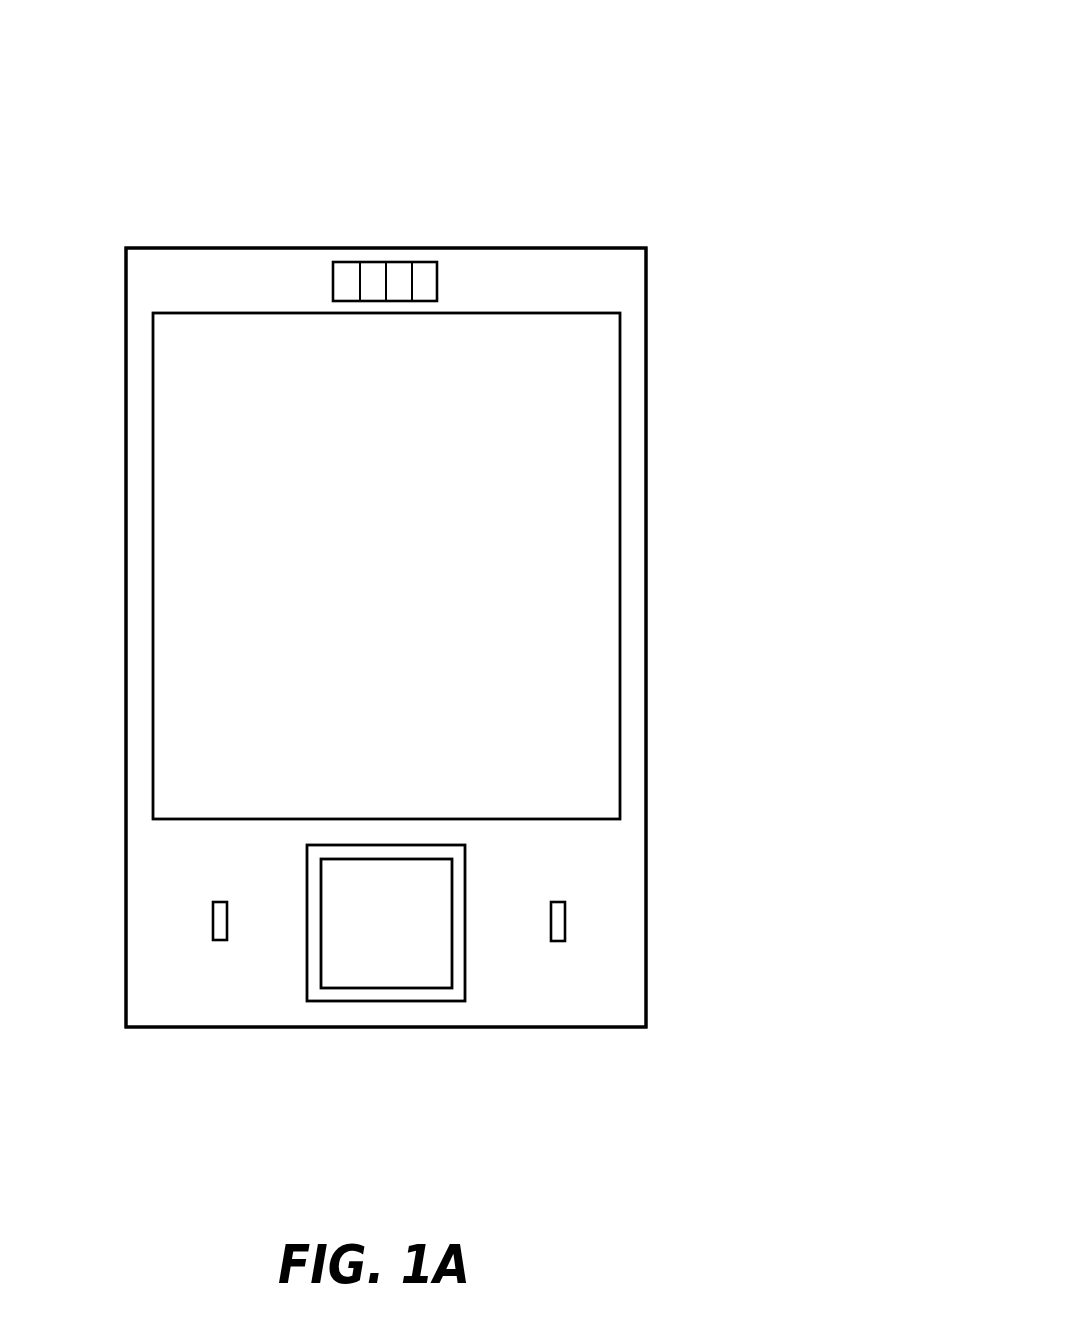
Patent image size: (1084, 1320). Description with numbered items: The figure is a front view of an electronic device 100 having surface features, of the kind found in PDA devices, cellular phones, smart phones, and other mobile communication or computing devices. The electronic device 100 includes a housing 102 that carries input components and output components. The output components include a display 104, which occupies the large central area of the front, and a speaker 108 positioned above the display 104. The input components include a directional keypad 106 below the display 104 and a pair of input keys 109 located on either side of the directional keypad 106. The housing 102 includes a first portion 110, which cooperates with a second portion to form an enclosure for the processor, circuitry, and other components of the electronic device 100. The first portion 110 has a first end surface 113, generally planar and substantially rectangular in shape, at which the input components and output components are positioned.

The electronic device 100 is at (724, 155).
The housing 102 is at (646, 283).
The display 104 is at (593, 457).
The directional keypad 106 is at (384, 1002).
The speaker 108 is at (389, 262).
The input keys 109 is at (218, 941).
The first portion 110 is at (589, 290).
The first end surface 113 is at (617, 910).